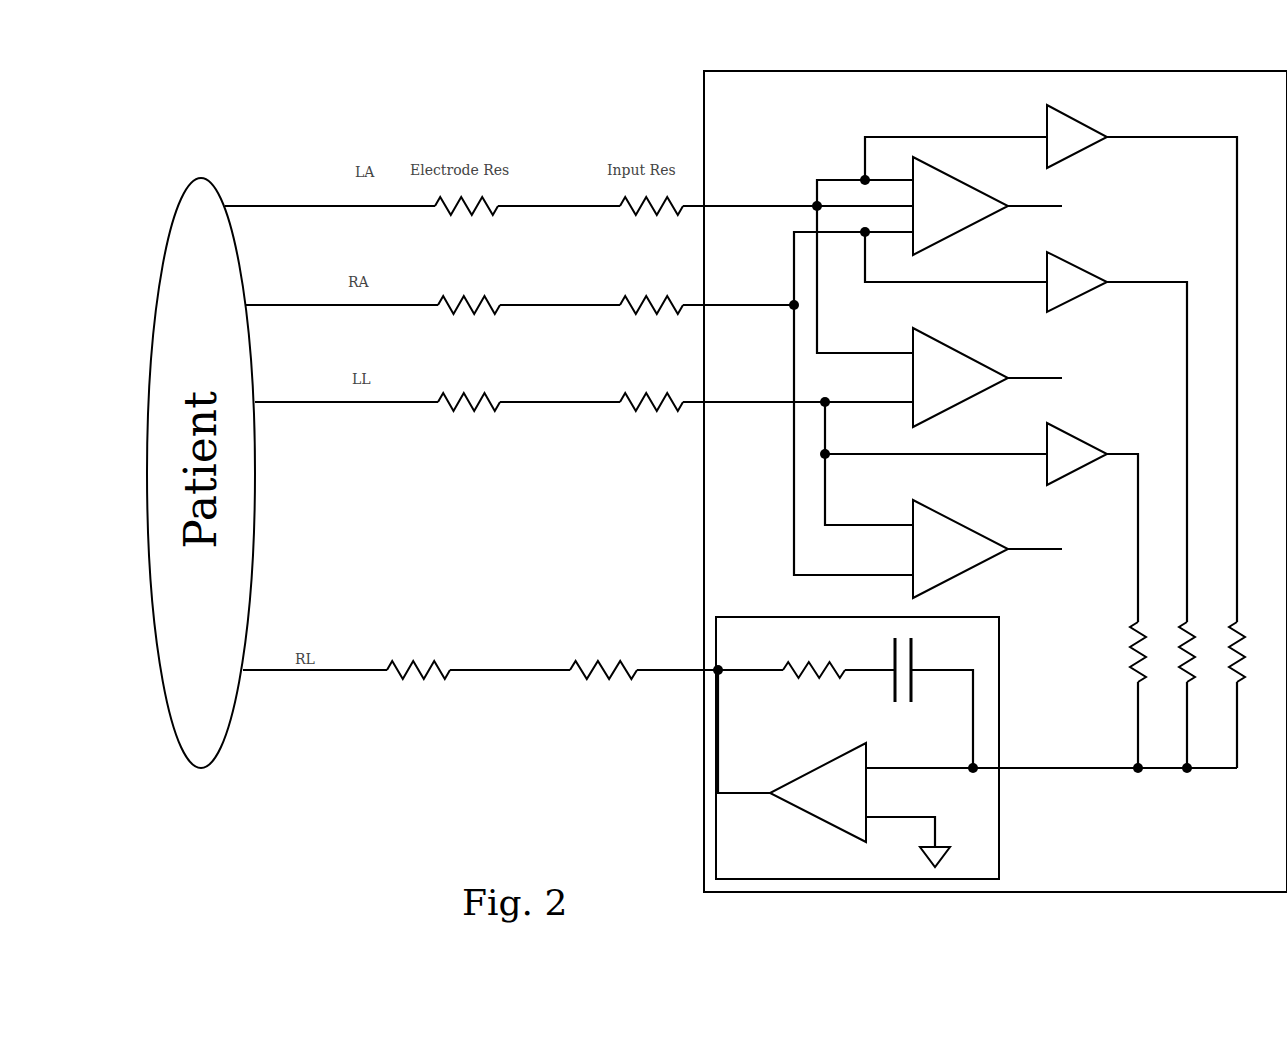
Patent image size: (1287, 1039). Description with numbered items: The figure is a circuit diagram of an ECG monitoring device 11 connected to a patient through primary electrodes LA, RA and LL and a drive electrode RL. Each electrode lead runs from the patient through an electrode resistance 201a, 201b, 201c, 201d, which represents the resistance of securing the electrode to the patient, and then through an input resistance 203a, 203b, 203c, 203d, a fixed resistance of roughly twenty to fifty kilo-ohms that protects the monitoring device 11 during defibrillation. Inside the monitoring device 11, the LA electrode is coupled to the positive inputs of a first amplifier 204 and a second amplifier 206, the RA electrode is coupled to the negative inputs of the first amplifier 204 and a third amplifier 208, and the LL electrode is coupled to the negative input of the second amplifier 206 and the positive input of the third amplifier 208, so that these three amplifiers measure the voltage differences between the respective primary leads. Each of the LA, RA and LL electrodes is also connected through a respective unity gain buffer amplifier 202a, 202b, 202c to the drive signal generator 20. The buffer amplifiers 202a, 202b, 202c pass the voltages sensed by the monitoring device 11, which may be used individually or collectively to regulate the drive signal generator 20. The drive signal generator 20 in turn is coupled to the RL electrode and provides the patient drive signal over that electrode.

The monitoring device 11 is at (995, 481).
The drive signal generator 20 is at (857, 748).
The electrode resistance 201a is at (460, 211).
The electrode resistance 201b is at (490, 312).
The electrode resistance 201c is at (490, 410).
The electrode resistance 201d is at (425, 683).
The input resistance 203a is at (626, 211).
The input resistance 203b is at (656, 312).
The input resistance 203c is at (656, 410).
The input resistance 203d is at (590, 692).
The unity gain buffer amplifier 202a is at (1046, 145).
The unity gain buffer amplifier 202b is at (1054, 308).
The unity gain buffer amplifier 202c is at (1036, 484).
The first amplifier 204 is at (990, 228).
The second amplifier 206 is at (1000, 392).
The third amplifier 208 is at (978, 567).